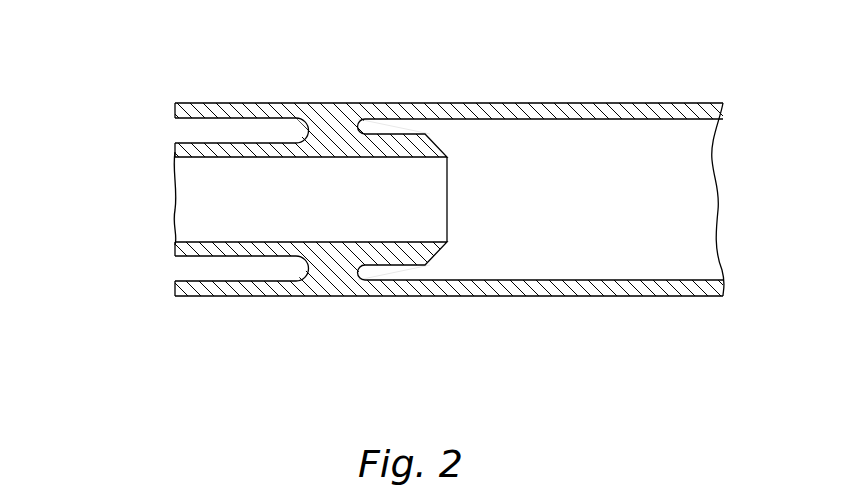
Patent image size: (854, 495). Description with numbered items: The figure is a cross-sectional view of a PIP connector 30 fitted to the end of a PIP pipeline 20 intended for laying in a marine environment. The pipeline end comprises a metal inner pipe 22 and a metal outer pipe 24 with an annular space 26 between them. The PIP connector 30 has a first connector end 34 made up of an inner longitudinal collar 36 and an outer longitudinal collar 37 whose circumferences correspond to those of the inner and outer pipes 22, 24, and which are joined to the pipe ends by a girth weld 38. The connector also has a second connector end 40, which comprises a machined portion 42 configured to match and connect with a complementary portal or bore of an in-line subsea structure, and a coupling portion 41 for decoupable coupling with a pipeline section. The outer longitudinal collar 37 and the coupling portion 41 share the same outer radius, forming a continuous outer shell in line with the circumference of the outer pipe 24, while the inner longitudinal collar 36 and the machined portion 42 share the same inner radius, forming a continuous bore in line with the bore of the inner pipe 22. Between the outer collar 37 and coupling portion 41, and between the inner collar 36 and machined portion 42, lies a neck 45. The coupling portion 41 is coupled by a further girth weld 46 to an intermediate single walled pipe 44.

The PIP pipeline 20 is at (193, 297).
The inner pipe 22 is at (173, 150).
The outer pipe 24 is at (173, 112).
The annular space 26 is at (178, 268).
The PIP connector 30 is at (335, 300).
The first connector end 34 is at (304, 100).
The inner longitudinal collar 36 is at (248, 157).
The outer longitudinal collar 37 is at (293, 103).
The girth weld 38 is at (275, 297).
The second connector end 40 is at (420, 166).
The coupling portion 41 is at (365, 296).
The machined portion 42 is at (424, 238).
The intermediate single walled pipe 44 is at (605, 297).
The neck 45 is at (308, 268).
The girth weld 46 is at (386, 104).